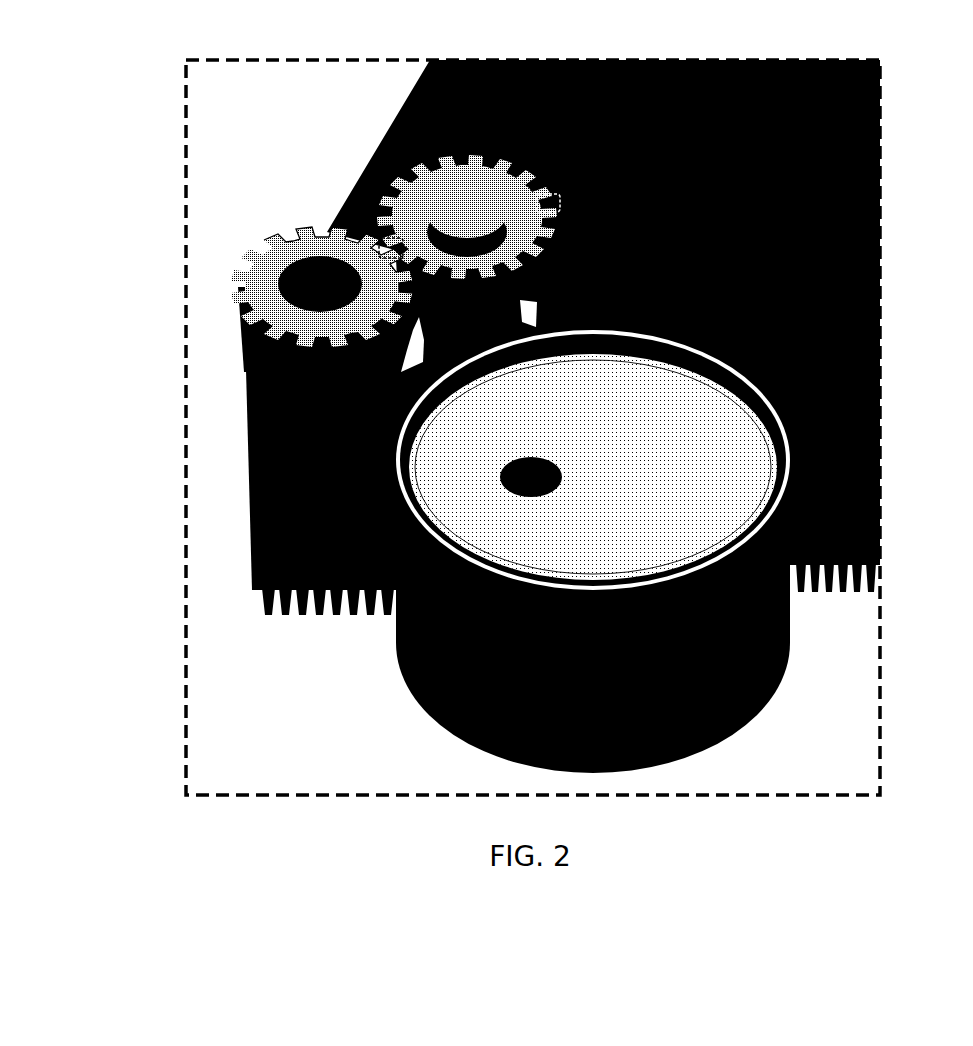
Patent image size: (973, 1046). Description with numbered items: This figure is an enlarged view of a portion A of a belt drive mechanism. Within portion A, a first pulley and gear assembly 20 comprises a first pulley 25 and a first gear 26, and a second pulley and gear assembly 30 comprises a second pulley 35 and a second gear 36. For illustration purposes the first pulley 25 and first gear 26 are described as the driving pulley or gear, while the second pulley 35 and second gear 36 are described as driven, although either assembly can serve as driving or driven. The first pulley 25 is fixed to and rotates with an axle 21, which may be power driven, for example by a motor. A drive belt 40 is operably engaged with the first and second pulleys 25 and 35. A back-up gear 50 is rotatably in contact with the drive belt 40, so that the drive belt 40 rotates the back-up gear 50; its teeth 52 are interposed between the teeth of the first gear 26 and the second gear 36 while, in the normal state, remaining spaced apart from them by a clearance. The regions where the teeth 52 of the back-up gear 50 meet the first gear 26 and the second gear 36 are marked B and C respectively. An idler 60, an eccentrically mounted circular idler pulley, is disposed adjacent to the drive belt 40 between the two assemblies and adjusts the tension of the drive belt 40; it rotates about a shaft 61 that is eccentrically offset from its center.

The portion A is at (111, 101).
The first pulley and gear assembly 20 is at (290, 205).
The axle 21 is at (245, 370).
The first pulley 25 is at (313, 612).
The first gear 26 is at (258, 257).
The second pulley and gear assembly 30 is at (884, 145).
The second pulley 35 is at (853, 595).
The second gear 36 is at (885, 370).
The drive belt 40 is at (252, 523).
The back-up gear 50 is at (397, 148).
The teeth of the back-up gear 52 is at (353, 185).
The idler 60 is at (443, 727).
The shaft 61 is at (562, 473).
The engagement region B is at (380, 242).
The engagement region C is at (552, 191).